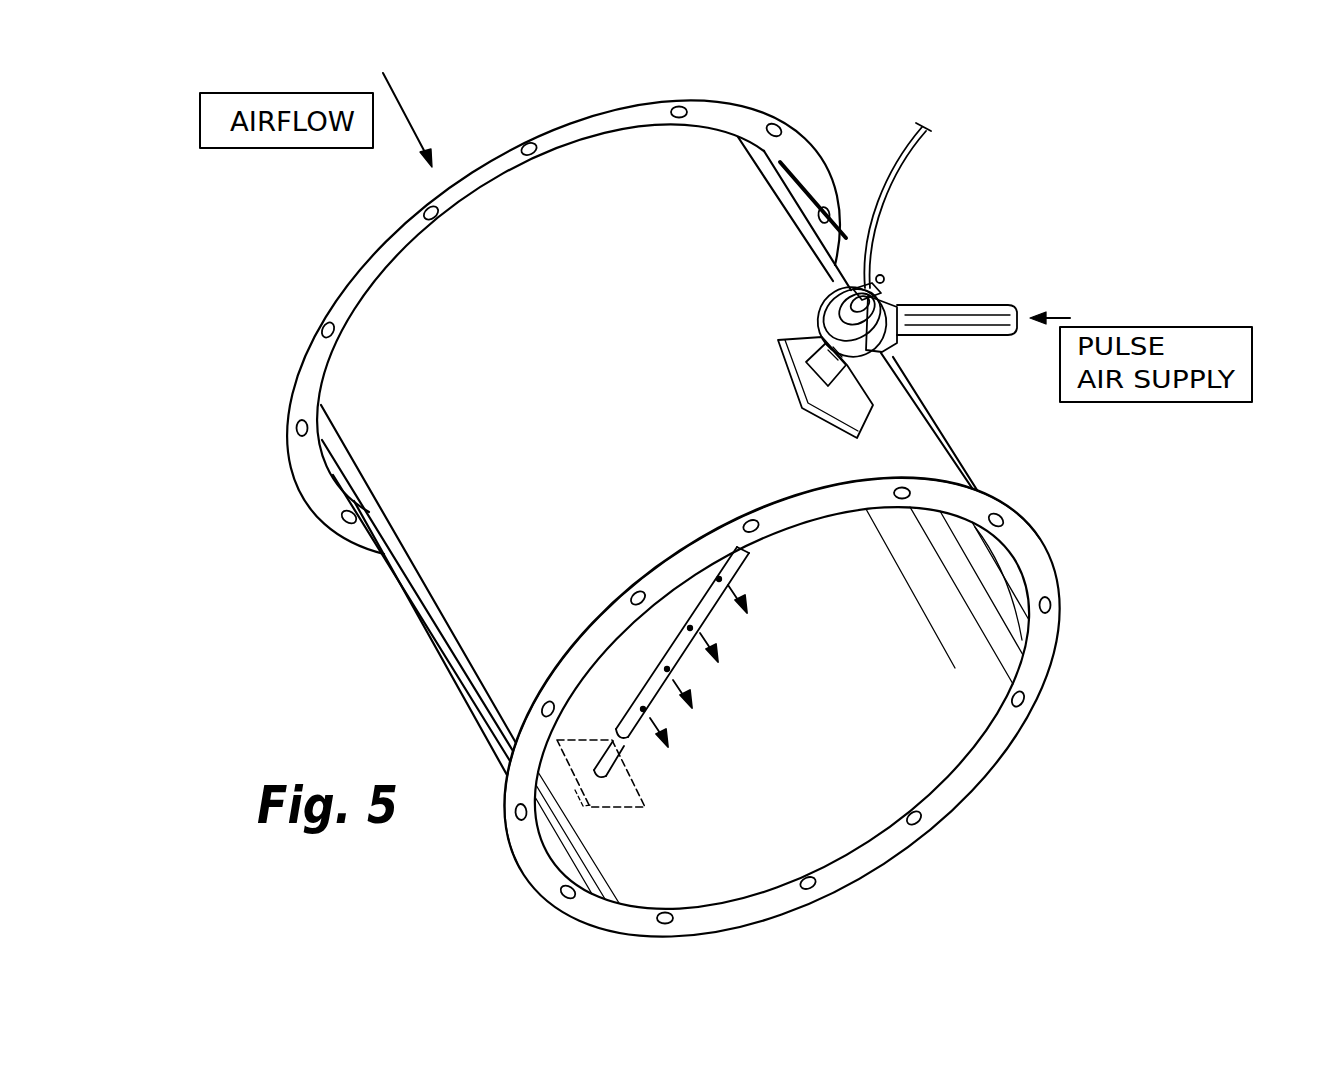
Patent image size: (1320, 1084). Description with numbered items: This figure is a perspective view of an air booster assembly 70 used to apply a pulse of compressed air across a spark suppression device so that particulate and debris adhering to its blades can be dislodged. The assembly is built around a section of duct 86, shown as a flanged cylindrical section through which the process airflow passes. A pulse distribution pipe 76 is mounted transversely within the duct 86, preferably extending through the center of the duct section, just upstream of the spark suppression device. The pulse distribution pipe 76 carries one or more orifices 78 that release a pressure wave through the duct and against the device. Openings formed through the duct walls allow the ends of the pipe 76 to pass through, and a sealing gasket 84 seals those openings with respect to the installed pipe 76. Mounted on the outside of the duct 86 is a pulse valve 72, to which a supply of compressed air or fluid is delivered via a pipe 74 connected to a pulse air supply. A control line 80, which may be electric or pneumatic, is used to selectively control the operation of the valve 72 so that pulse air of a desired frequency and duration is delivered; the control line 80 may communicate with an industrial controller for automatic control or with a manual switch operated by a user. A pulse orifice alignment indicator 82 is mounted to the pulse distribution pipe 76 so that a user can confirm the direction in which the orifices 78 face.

The air booster assembly 70 is at (933, 268).
The pulse valve 72 is at (831, 332).
The pipe 74 is at (982, 303).
The pulse distribution pipe 76 is at (653, 640).
The orifices 78 is at (722, 578).
The control line 80 is at (897, 187).
The pulse orifice alignment indicator 82 is at (857, 422).
The sealing gasket 84 is at (790, 383).
The duct 86 is at (607, 328).